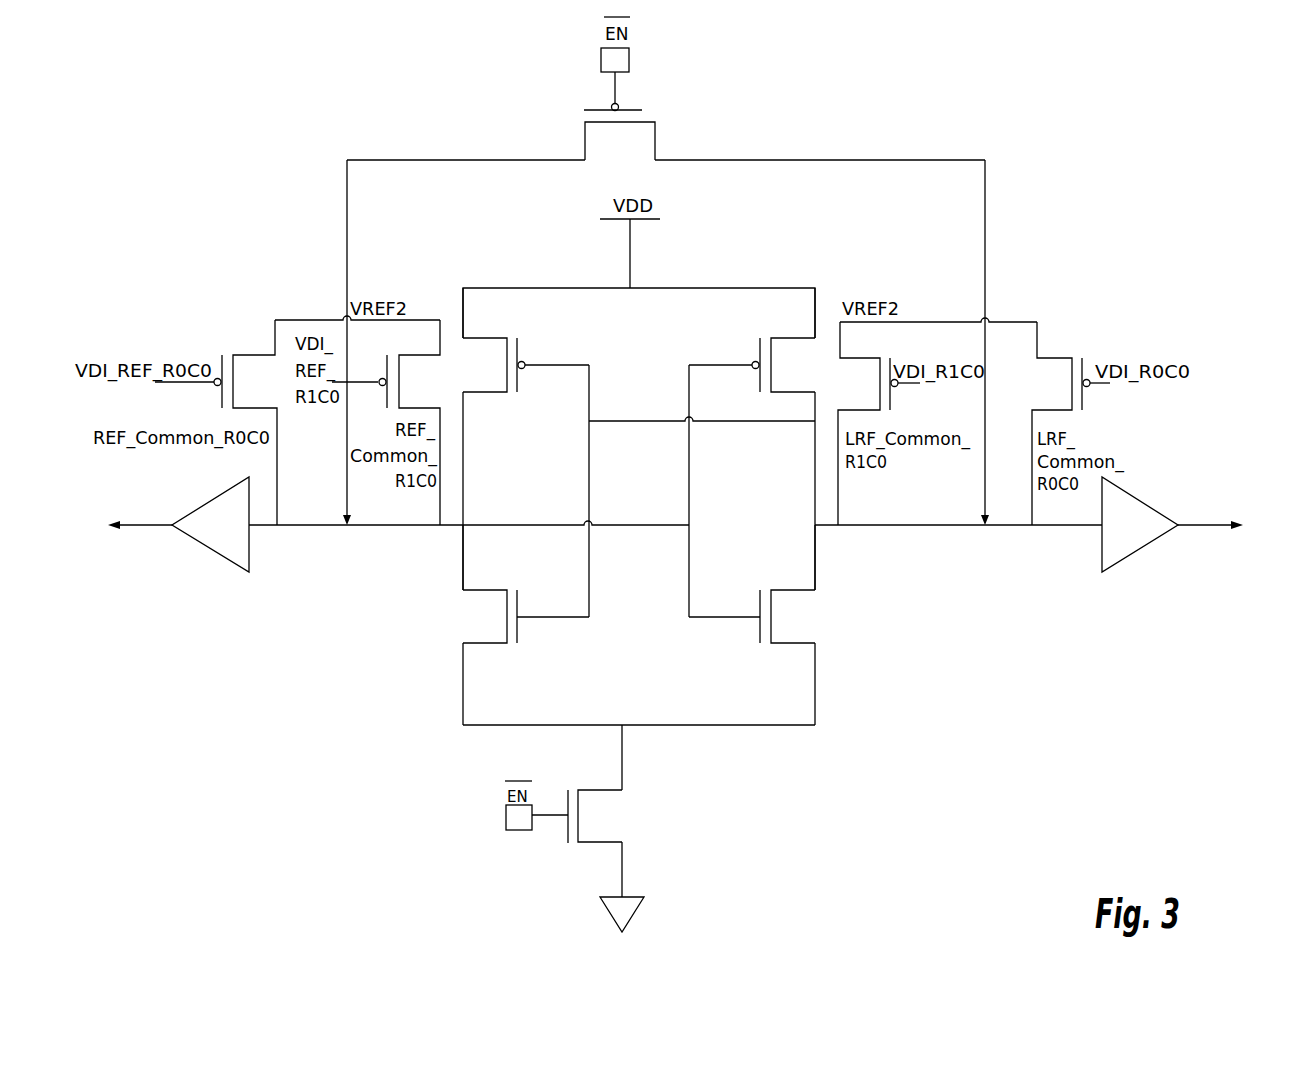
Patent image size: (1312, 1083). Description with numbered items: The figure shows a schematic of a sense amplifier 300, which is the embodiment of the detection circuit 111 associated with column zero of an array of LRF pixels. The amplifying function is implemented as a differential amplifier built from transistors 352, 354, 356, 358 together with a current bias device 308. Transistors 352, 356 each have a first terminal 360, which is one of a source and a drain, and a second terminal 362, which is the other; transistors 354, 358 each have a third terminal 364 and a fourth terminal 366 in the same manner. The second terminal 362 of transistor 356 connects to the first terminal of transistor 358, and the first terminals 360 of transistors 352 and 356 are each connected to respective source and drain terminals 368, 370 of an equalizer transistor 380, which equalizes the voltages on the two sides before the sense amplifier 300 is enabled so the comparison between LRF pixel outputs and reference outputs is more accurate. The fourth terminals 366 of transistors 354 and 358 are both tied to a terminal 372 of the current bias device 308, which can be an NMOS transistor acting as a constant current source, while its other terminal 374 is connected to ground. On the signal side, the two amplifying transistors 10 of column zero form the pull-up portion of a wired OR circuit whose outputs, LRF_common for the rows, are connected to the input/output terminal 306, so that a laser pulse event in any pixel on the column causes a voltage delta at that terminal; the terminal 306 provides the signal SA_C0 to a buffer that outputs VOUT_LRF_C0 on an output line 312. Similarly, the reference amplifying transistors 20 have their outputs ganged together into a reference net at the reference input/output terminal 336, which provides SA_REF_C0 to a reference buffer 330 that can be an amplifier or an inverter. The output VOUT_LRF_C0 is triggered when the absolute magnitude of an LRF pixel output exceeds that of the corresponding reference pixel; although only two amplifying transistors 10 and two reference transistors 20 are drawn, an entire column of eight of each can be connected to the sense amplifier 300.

The detection circuit 111 is at (812, 90).
The sense amplifier 300 is at (1082, 97).
The source and drain terminal of the equalizer transistor 368 is at (582, 159).
The source and drain terminal of the equalizer transistor 370 is at (645, 158).
The equalizer transistor 380 is at (618, 140).
The first terminal 360 is at (467, 338).
The second terminal 362 is at (468, 393).
The transistor 356 is at (503, 366).
The transistor 352 is at (782, 378).
The third terminal 364 is at (467, 590).
The fourth terminal 366 is at (467, 645).
The transistor 358 is at (487, 619).
The transistor 354 is at (788, 619).
The terminal of current bias device 372 is at (616, 789).
The source terminal of enable NMOS transistor 374 is at (617, 845).
The current bias device 308 is at (598, 815).
The reference buffer 330 is at (202, 549).
The reference input/output terminal 336 is at (262, 528).
The input/output terminal 306 is at (870, 533).
The output line 312 is at (1200, 533).
The reference amplifying transistor 20 is at (241, 378).
The amplifying transistor 10 is at (873, 372).